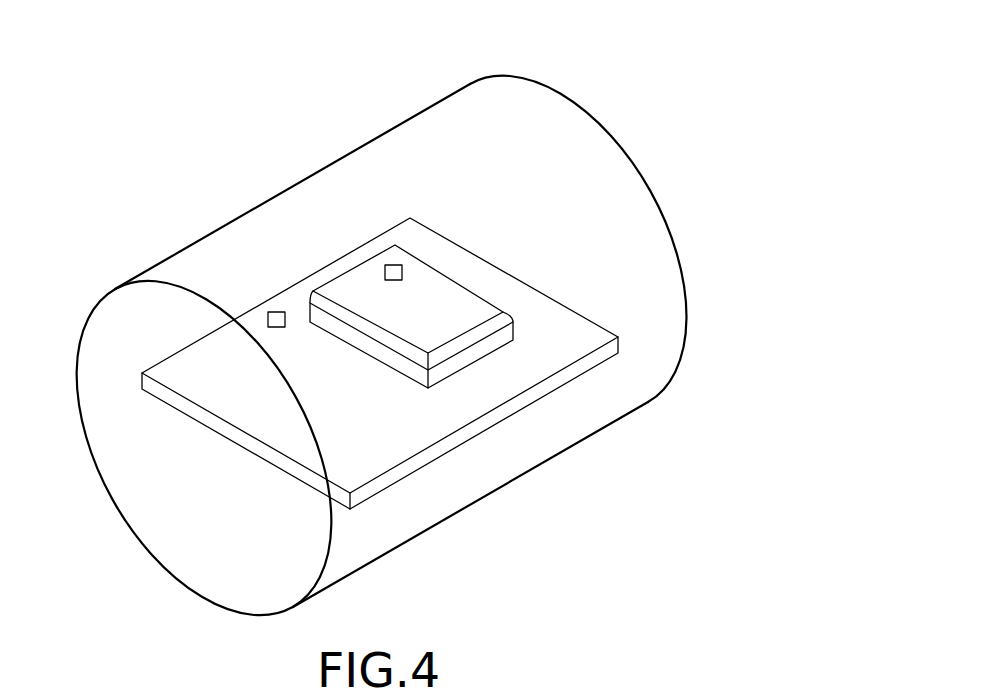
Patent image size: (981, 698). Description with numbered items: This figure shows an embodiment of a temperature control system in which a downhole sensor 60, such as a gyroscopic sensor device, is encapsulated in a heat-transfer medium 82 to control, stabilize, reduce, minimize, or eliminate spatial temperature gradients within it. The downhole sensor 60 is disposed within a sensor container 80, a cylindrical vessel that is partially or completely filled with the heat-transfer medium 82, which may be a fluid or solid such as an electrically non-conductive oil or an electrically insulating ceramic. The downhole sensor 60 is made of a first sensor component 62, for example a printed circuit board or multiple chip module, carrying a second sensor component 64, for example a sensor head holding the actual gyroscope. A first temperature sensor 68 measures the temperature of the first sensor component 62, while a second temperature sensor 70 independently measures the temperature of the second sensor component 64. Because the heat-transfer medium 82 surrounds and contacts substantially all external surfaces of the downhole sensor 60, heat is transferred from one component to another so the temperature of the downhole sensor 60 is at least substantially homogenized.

The downhole sensor 60 is at (460, 480).
The first sensor component 62 is at (253, 437).
The second sensor component 64 is at (475, 333).
The first temperature sensor 68 is at (272, 312).
The second temperature sensor 70 is at (388, 265).
The sensor container 80 is at (535, 87).
The heat-transfer medium 82 is at (436, 140).